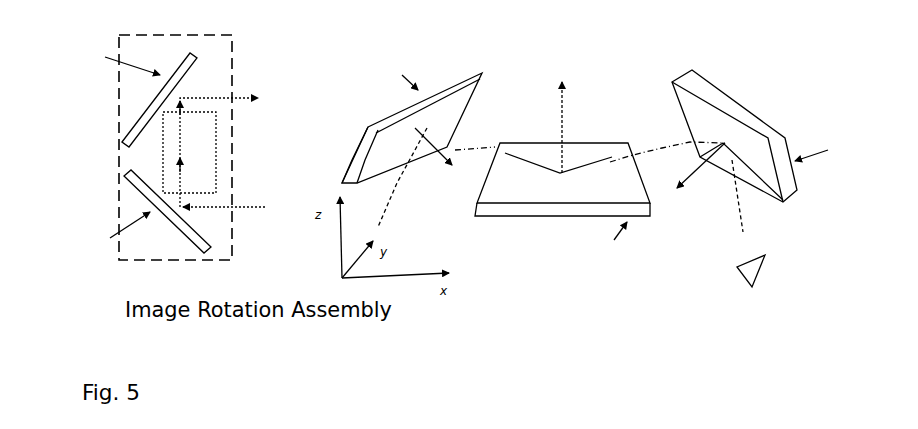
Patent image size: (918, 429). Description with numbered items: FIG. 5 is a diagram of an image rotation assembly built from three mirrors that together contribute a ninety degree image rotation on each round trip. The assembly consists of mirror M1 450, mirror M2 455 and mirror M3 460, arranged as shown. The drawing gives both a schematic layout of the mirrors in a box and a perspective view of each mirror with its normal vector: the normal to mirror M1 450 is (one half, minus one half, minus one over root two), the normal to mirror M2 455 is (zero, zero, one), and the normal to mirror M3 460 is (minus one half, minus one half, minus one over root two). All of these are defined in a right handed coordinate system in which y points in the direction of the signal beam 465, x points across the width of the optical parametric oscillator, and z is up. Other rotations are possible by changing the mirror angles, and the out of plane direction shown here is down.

The mirror M1 450 is at (252, 143).
The mirror M2 455 is at (406, 168).
The mirror M3 460 is at (434, 158).
The signal beam 465 is at (243, 207).